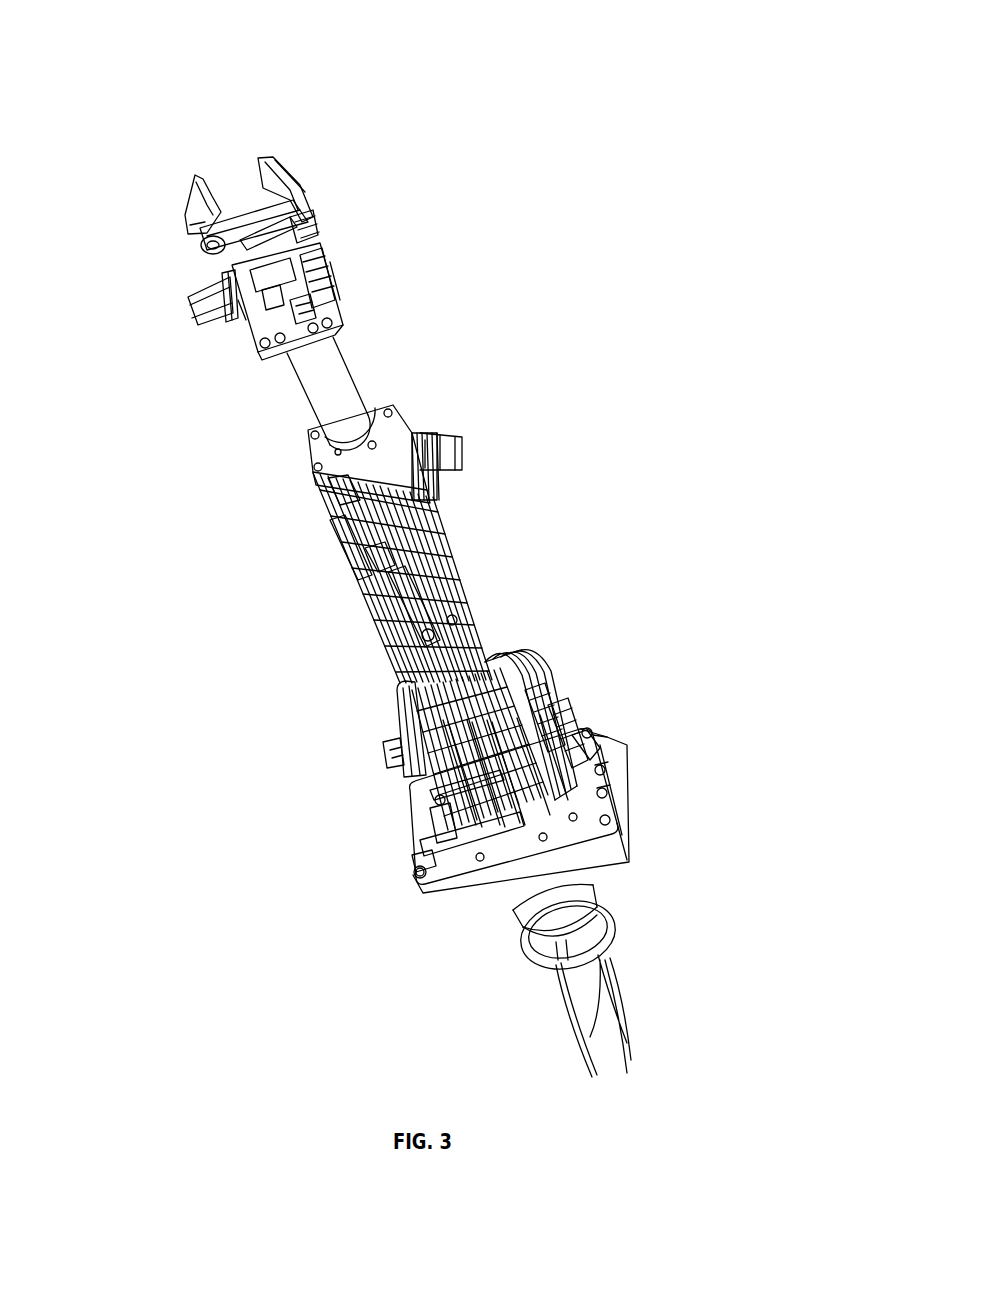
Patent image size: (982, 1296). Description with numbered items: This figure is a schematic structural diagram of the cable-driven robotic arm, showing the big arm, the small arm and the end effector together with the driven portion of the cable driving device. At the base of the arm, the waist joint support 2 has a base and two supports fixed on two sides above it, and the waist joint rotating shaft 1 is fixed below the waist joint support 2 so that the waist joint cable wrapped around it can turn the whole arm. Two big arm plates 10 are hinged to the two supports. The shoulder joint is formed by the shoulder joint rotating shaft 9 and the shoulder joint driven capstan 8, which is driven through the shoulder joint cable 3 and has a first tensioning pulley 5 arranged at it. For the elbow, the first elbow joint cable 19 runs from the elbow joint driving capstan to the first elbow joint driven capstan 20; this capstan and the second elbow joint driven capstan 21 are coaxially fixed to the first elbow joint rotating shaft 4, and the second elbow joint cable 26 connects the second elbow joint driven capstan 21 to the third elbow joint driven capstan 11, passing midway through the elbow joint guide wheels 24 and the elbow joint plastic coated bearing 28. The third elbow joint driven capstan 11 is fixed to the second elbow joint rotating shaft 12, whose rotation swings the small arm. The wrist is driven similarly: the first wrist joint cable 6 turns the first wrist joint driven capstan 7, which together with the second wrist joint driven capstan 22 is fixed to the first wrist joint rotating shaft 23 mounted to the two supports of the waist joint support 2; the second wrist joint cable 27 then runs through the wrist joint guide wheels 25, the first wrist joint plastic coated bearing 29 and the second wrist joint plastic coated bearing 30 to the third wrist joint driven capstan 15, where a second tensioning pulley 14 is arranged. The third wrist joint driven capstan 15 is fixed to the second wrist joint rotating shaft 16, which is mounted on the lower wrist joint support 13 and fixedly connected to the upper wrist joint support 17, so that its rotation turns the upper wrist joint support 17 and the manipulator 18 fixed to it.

The waist joint rotating shaft 1 is at (605, 910).
The waist joint support 2 is at (567, 868).
The shoulder joint cable 3 is at (613, 793).
The first elbow joint rotating shaft 4 is at (603, 767).
The first tensioning pulley 5 is at (600, 752).
The first wrist joint cable 6 is at (583, 730).
The first wrist joint driven capstan 7 is at (557, 720).
The shoulder joint driven capstan 8 is at (533, 710).
The shoulder joint rotating shaft 9 is at (500, 685).
The big arm plates 10 is at (460, 597).
The third elbow joint driven capstan 11 is at (465, 472).
The second elbow joint rotating shaft 12 is at (460, 445).
The lower wrist joint support 13 is at (327, 333).
The second tensioning pulley 14 is at (343, 310).
The third wrist joint driven capstan 15 is at (343, 293).
The second wrist joint rotating shaft 16 is at (337, 273).
The upper wrist joint support 17 is at (328, 250).
The manipulator 18 is at (297, 183).
The first elbow joint cable 19 is at (422, 852).
The first elbow joint driven capstan 20 is at (445, 833).
The second elbow joint driven capstan 21 is at (440, 815).
The second wrist joint driven capstan 22 is at (440, 797).
The first wrist joint rotating shaft 23 is at (440, 770).
The elbow joint guide wheels 24 is at (383, 745).
The wrist joint guide wheels 25 is at (440, 722).
The second elbow joint cable 26 is at (400, 693).
The second wrist joint cable 27 is at (395, 580).
The elbow joint plastic coated bearing 28 is at (373, 557).
The first wrist joint plastic coated bearing 29 is at (335, 528).
The second wrist joint plastic coated bearing 30 is at (335, 480).